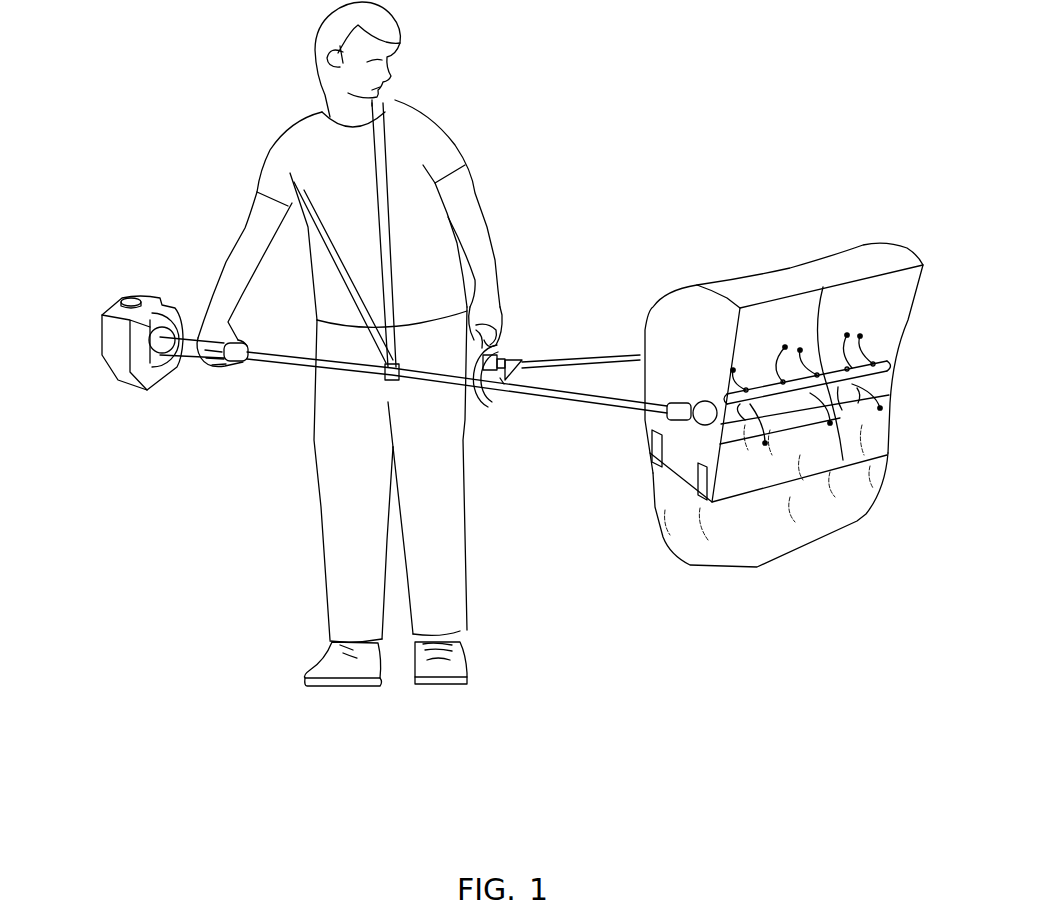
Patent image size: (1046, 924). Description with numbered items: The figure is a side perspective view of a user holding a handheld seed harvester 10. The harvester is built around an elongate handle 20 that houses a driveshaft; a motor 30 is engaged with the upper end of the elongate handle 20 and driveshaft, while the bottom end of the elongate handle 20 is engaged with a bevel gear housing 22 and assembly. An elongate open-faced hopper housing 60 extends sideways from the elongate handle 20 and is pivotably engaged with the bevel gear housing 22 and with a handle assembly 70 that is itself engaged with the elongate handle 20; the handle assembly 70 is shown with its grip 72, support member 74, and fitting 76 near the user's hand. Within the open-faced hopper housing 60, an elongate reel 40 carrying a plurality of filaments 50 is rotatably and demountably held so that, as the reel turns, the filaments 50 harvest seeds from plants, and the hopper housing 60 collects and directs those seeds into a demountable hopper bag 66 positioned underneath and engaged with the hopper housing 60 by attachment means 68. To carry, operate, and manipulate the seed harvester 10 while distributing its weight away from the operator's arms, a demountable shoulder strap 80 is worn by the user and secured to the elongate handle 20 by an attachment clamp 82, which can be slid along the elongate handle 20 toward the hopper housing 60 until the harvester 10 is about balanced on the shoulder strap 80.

The handheld seed harvester 10 is at (636, 190).
The elongate handle 20 is at (262, 367).
The bevel gear housing 22 is at (657, 413).
The motor 30 is at (100, 318).
The elongate reel 40 is at (850, 386).
The filaments 50 is at (870, 351).
The open-faced hopper housing 60 is at (764, 385).
The hopper bag 66 is at (657, 530).
The attachment means 68 is at (698, 465).
The handle assembly 70 is at (578, 326).
The hand grip 72 is at (488, 413).
The support rod 74 is at (535, 358).
The grip fitting 76 is at (502, 390).
The shoulder strap 80 is at (383, 122).
The attachment clamp 82 is at (384, 381).